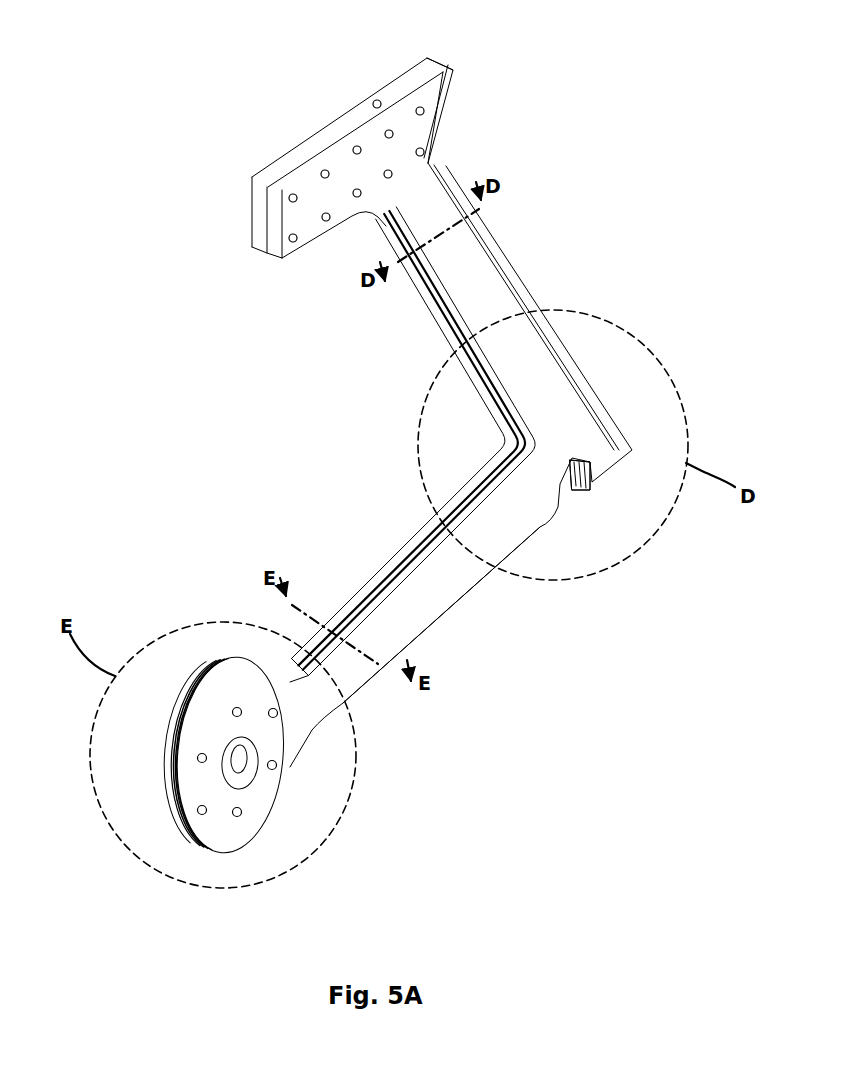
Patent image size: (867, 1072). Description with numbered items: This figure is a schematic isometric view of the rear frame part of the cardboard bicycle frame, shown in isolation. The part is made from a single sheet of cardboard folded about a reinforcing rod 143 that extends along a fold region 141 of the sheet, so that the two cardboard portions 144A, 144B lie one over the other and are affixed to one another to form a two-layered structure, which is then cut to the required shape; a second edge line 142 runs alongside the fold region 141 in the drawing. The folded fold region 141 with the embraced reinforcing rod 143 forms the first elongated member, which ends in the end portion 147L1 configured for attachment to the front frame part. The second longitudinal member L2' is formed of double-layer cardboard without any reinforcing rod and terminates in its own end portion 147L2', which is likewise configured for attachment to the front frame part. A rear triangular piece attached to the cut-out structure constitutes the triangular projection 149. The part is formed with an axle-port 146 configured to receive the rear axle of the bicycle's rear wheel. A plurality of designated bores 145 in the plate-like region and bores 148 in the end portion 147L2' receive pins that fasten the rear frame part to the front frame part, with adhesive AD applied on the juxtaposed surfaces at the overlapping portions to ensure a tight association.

The fold region 141 is at (522, 280).
The arm edge / flange 142 is at (487, 242).
The reinforcing rod 143 is at (383, 109).
The cardboard portion 144A is at (260, 216).
The cardboard portion 144B is at (286, 252).
The bores 145 is at (293, 197).
The axle-port 146 is at (572, 502).
The end portion 147L1 is at (413, 174).
The end portion 147L2' is at (276, 785).
The bores 148 is at (237, 815).
The triangular projection 149 is at (427, 75).
The adhesive AD is at (270, 256).
The longitudinal member L2' is at (441, 615).